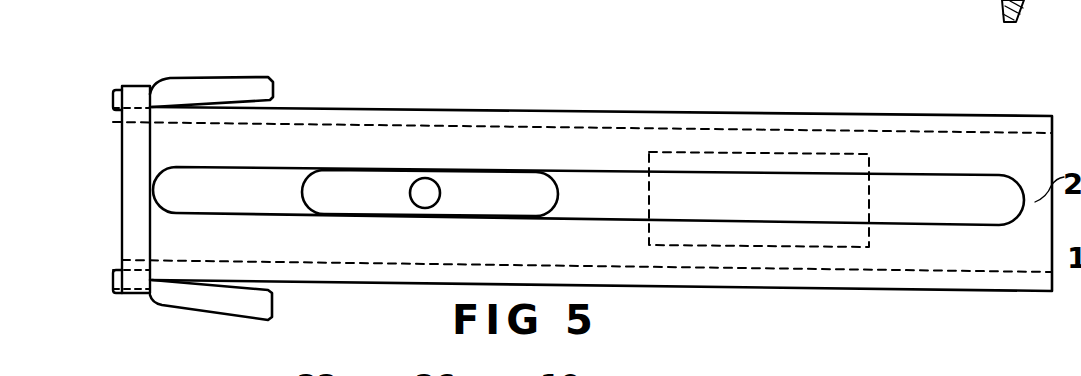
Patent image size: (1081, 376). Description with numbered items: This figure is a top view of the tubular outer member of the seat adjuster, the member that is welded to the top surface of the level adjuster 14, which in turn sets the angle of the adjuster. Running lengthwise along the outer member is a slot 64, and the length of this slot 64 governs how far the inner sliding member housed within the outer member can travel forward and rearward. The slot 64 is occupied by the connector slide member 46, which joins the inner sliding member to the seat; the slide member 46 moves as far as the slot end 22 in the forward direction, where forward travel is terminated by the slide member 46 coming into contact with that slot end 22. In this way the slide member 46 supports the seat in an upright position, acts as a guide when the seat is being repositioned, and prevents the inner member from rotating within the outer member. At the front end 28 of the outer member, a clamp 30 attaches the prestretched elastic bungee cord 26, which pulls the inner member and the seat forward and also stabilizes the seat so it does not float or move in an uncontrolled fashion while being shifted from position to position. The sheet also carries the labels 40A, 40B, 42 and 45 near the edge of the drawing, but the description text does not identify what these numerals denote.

The level adjuster 14 is at (743, 152).
The slot end 22 is at (138, 187).
The elastic bungee cord 26 is at (235, 77).
The front end 28 is at (103, 152).
The clamp 30 is at (140, 138).
The connector slide member 46 is at (378, 193).
The slot 64 is at (578, 192).
The element 40A is at (1041, 11).
The element 40B is at (1080, 95).
The element 42 is at (1080, 42).
The element 45 is at (1080, 90).